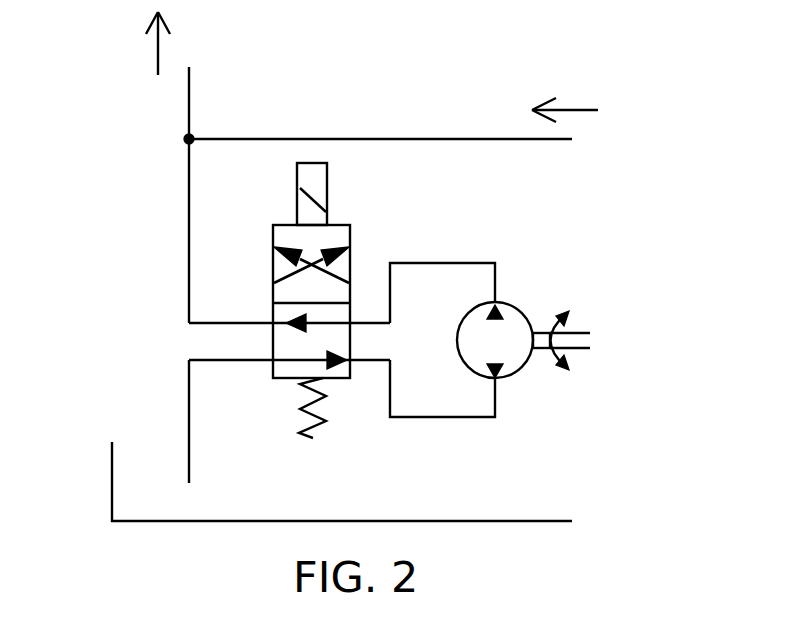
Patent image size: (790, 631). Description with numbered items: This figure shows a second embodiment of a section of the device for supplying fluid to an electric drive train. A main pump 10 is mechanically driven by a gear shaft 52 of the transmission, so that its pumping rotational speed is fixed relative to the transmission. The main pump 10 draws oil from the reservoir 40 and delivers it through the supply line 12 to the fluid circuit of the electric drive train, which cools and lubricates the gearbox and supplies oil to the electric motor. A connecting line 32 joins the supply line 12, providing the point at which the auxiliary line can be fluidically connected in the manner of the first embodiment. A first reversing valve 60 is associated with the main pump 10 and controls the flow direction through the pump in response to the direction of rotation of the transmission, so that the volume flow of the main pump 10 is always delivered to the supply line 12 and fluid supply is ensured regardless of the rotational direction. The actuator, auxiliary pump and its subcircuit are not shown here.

The main pump 10 is at (512, 320).
The supply line 12 is at (183, 212).
The connecting line 32 is at (372, 139).
The reservoir 40 is at (112, 480).
The gear shaft 52 is at (570, 342).
The first reversing valve 60 is at (336, 375).